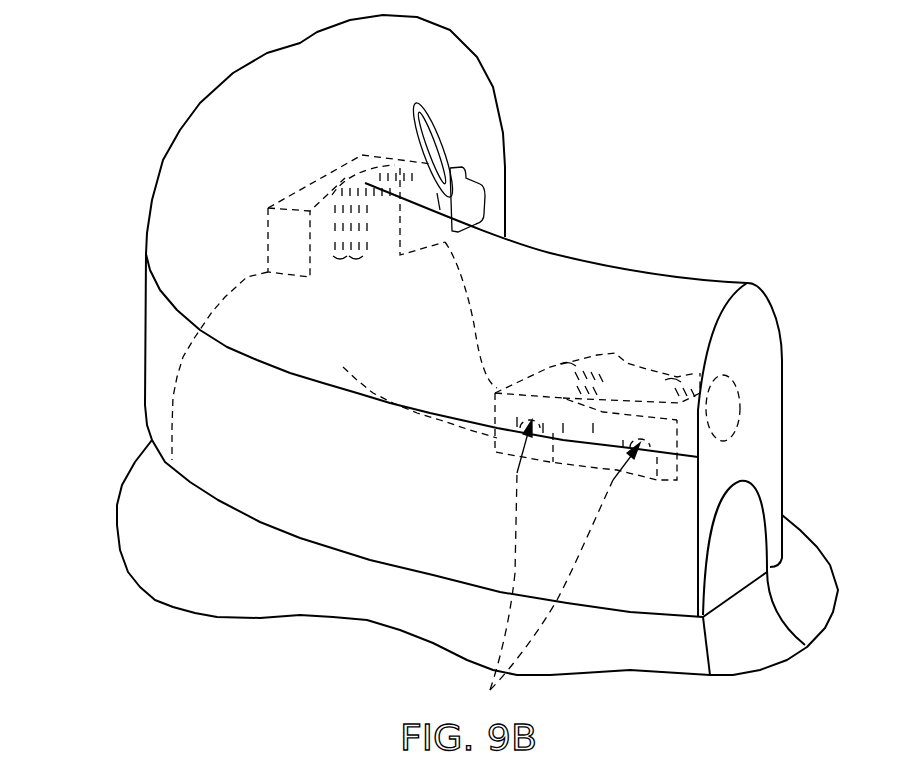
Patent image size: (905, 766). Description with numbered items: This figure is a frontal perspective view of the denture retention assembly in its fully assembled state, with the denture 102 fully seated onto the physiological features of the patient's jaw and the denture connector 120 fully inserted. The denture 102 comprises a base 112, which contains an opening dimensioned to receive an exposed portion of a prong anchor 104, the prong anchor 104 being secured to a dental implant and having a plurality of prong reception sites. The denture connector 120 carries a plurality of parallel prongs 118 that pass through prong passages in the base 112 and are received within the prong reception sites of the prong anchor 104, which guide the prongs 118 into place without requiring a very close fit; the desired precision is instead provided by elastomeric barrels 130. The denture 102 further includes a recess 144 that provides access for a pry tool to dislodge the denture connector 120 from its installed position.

The denture 102 is at (135, 250).
The prong anchor 104 is at (302, 138).
The base 112 is at (297, 583).
The prong 118 is at (490, 688).
The denture connector 120 is at (512, 194).
The elastomeric barrel 130 is at (338, 275).
The recess 144 is at (427, 115).